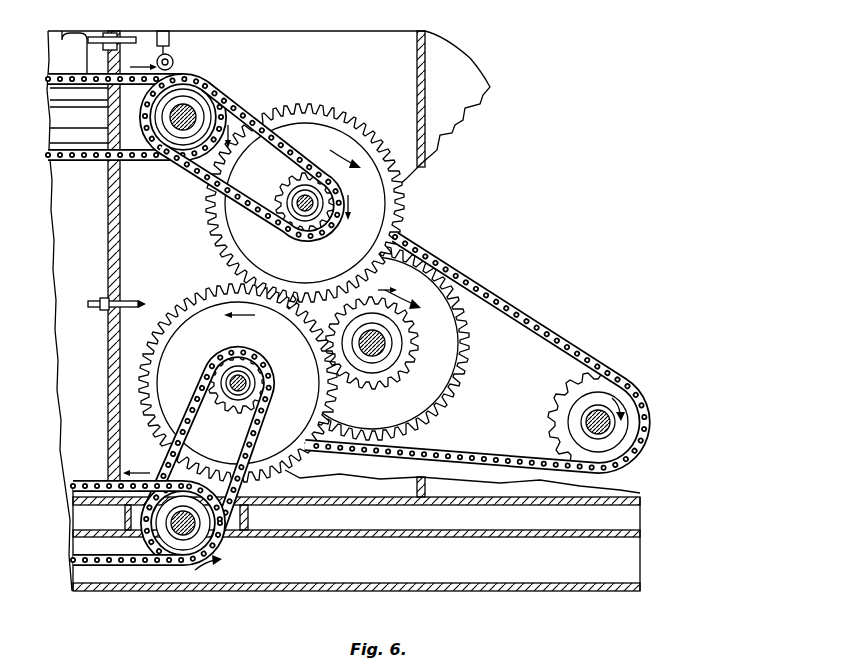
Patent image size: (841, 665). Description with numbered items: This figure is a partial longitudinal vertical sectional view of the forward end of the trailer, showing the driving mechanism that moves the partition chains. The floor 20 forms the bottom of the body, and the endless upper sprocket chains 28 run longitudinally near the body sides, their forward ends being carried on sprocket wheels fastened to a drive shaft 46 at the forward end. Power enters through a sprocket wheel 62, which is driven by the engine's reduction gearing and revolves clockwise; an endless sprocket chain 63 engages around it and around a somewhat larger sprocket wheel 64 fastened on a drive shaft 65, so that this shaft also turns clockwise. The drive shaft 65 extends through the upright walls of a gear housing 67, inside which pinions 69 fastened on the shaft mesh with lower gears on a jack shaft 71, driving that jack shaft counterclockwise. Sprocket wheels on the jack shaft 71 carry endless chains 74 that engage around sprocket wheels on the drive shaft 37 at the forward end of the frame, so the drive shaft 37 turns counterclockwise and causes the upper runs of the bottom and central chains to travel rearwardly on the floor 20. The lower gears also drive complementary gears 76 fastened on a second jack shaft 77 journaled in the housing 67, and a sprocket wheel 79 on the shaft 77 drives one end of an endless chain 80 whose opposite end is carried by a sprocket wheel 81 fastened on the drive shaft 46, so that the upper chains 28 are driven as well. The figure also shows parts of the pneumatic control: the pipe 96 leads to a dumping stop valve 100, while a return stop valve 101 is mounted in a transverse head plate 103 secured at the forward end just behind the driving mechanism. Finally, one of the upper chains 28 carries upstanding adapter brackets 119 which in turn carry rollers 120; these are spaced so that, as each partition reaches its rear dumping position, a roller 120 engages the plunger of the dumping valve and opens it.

The floor 20 is at (330, 497).
The upper sprocket chains 28 is at (93, 158).
The drive shaft 37 is at (225, 540).
The drive shaft 46 is at (188, 110).
The sprocket wheel 62 is at (613, 390).
The endless sprocket chain 63 is at (537, 315).
The sprocket wheel 64 is at (473, 267).
The drive shaft 65 is at (382, 340).
The gear housing 67 is at (425, 48).
The pinions 69 is at (352, 377).
The jack shaft 71 is at (238, 383).
The endless chains 74 is at (210, 405).
The complementary gears 76 is at (340, 112).
The jack shaft 77 is at (310, 200).
The sprocket wheel 79 is at (303, 175).
The endless chain 80 is at (248, 110).
The sprocket wheel 81 is at (180, 138).
The pipe 96 is at (128, 31).
The dumping stop valve 100 is at (105, 33).
The return stop valve 101 is at (105, 302).
The transverse head plate 103 is at (108, 388).
The adapter brackets 119 is at (175, 62).
The rollers 120 is at (173, 50).